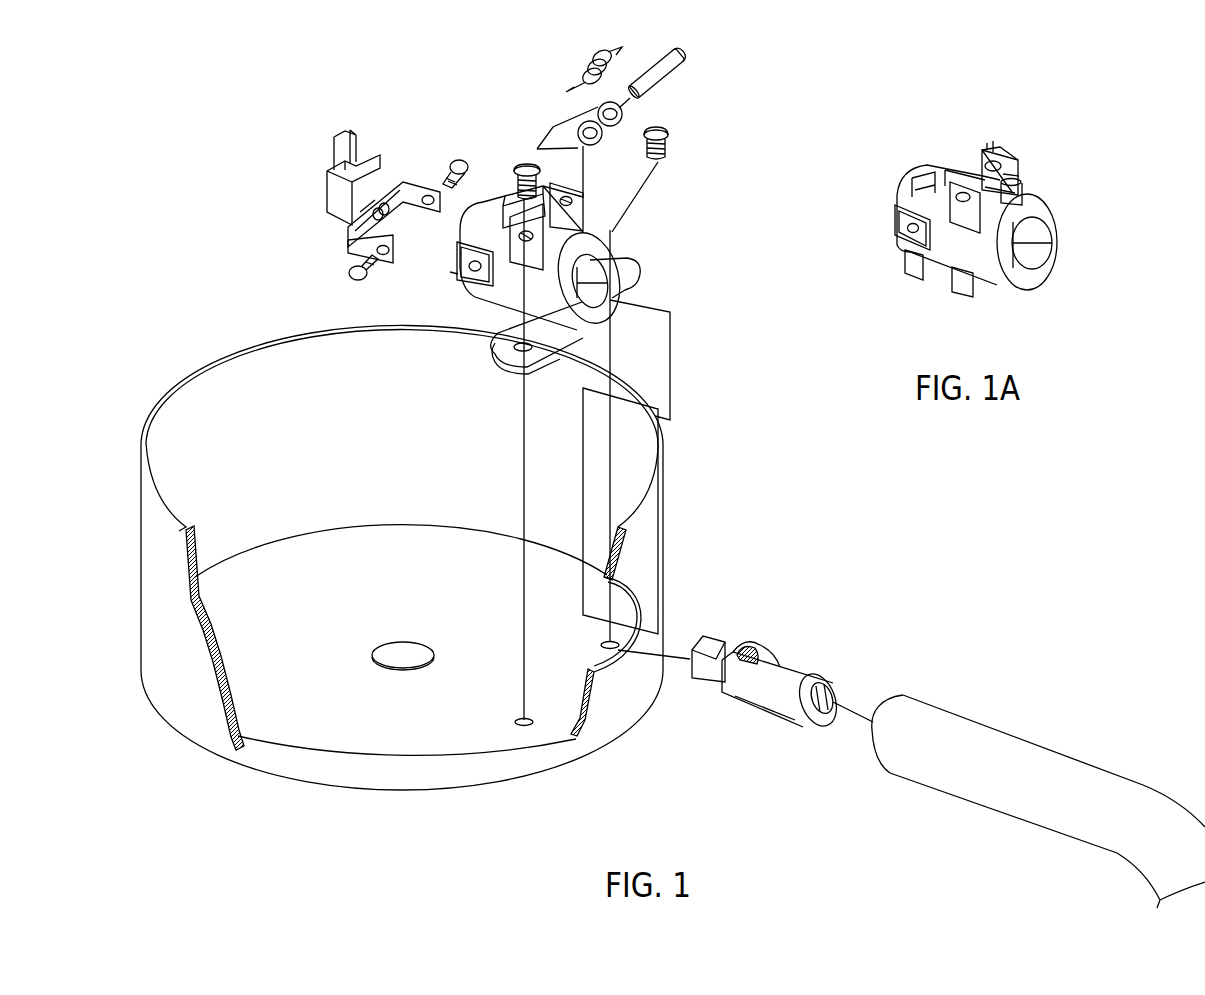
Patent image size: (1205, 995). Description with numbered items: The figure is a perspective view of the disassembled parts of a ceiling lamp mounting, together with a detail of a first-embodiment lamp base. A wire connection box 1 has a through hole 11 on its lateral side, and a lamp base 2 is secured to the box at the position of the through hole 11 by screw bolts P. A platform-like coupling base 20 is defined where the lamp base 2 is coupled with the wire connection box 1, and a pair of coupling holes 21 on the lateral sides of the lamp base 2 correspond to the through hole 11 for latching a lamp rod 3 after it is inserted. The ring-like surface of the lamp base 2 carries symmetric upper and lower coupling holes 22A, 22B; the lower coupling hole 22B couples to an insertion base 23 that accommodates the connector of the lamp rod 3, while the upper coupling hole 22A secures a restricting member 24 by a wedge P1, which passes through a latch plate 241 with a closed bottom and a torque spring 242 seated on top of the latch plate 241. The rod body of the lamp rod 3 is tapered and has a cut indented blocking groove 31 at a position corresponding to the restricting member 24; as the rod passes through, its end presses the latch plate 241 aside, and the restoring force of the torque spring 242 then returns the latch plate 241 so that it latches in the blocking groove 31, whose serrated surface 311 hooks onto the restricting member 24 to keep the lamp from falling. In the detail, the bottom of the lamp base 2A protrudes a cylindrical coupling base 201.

In FIG. 1, the wire connection box 1 is at (632, 688).
In FIG. 1, the through hole 11 is at (627, 597).
In FIG. 1, the lamp base 2 is at (541, 271).
In FIG. 1, the coupling base 20 is at (501, 347).
In FIG. 1, the coupling holes 21 is at (600, 281).
In FIG. 1A, the coupling holes 21 is at (1032, 243).
In FIG. 1, the upper coupling hole 22A is at (558, 190).
In FIG. 1A, the upper coupling hole 22A is at (990, 153).
In FIG. 1, the lower coupling hole 22B is at (468, 268).
In FIG. 1A, the lower coupling hole 22B is at (917, 233).
In FIG. 1, the insertion base 23 is at (335, 217).
In FIG. 1, the restricting member 24 is at (593, 100).
In FIG. 1, the latch plate 241 is at (551, 139).
In FIG. 1, the torque spring 242 is at (605, 47).
In FIG. 1, the wedge P1 is at (666, 54).
In FIG. 1, the screw bolts P is at (670, 139).
In FIG. 1, the lamp rod 3 is at (745, 666).
In FIG. 1, the blocking groove 31 is at (779, 619).
In FIG. 1, the serrated surface 311 is at (748, 652).
In FIG. 1A, the lamp base 2A is at (979, 217).
In FIG. 1A, the cylindrical coupling base 201 is at (940, 275).